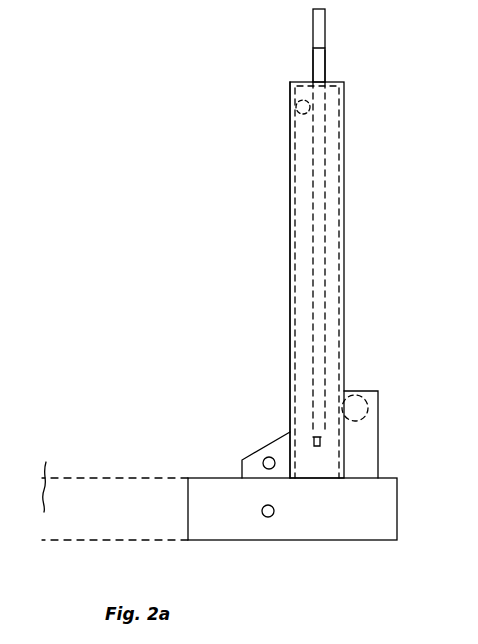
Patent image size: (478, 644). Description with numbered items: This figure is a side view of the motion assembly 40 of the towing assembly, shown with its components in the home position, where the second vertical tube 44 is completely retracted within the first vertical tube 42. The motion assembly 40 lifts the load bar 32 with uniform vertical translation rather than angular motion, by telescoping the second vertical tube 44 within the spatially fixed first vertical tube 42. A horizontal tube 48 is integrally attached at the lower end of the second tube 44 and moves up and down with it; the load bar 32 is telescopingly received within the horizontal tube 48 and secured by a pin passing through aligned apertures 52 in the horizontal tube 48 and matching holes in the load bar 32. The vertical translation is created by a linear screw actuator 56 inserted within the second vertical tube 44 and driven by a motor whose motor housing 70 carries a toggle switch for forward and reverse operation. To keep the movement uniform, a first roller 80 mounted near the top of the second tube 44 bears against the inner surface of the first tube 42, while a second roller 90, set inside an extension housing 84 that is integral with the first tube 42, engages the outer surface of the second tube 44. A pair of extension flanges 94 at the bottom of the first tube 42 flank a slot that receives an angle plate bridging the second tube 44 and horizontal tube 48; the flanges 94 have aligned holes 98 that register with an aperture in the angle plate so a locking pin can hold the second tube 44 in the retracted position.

The load bar 32 is at (98, 488).
The motion assembly 40 is at (384, 230).
The first vertical tube 42 is at (289, 250).
The second vertical tube 44 is at (343, 254).
The horizontal tube 48 is at (365, 513).
The apertures 52 is at (269, 517).
The linear screw actuator 56 is at (312, 72).
The motor housing 70 is at (323, 40).
The first roller 80 is at (290, 114).
The extension housing 84 is at (378, 450).
The second roller 90 is at (366, 390).
The extension flanges 94 is at (241, 470).
The holes 98 is at (269, 456).